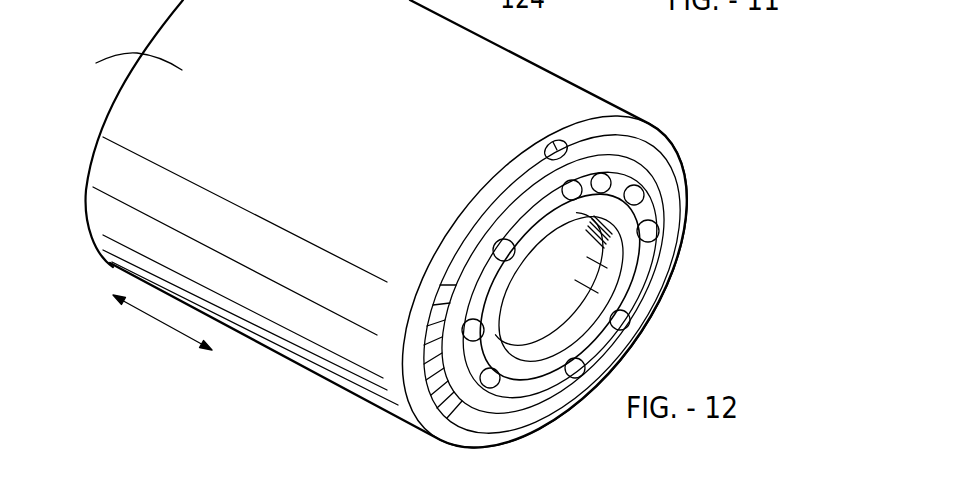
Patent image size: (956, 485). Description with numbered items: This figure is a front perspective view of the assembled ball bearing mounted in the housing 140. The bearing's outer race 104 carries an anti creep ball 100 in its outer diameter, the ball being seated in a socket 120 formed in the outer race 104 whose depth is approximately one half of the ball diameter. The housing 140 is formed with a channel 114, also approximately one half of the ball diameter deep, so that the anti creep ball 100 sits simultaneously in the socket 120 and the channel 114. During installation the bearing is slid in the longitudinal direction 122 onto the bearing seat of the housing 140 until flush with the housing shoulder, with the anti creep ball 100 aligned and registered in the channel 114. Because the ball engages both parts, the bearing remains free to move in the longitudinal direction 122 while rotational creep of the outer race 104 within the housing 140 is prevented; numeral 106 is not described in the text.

The anti creep ball 100 is at (545, 142).
The channel 114 is at (562, 140).
The socket 120 is at (656, 163).
The outer race 104 is at (672, 227).
The inner race / hub 106 is at (593, 333).
The longitudinal direction 122 is at (159, 330).
The housing 140 is at (96, 63).